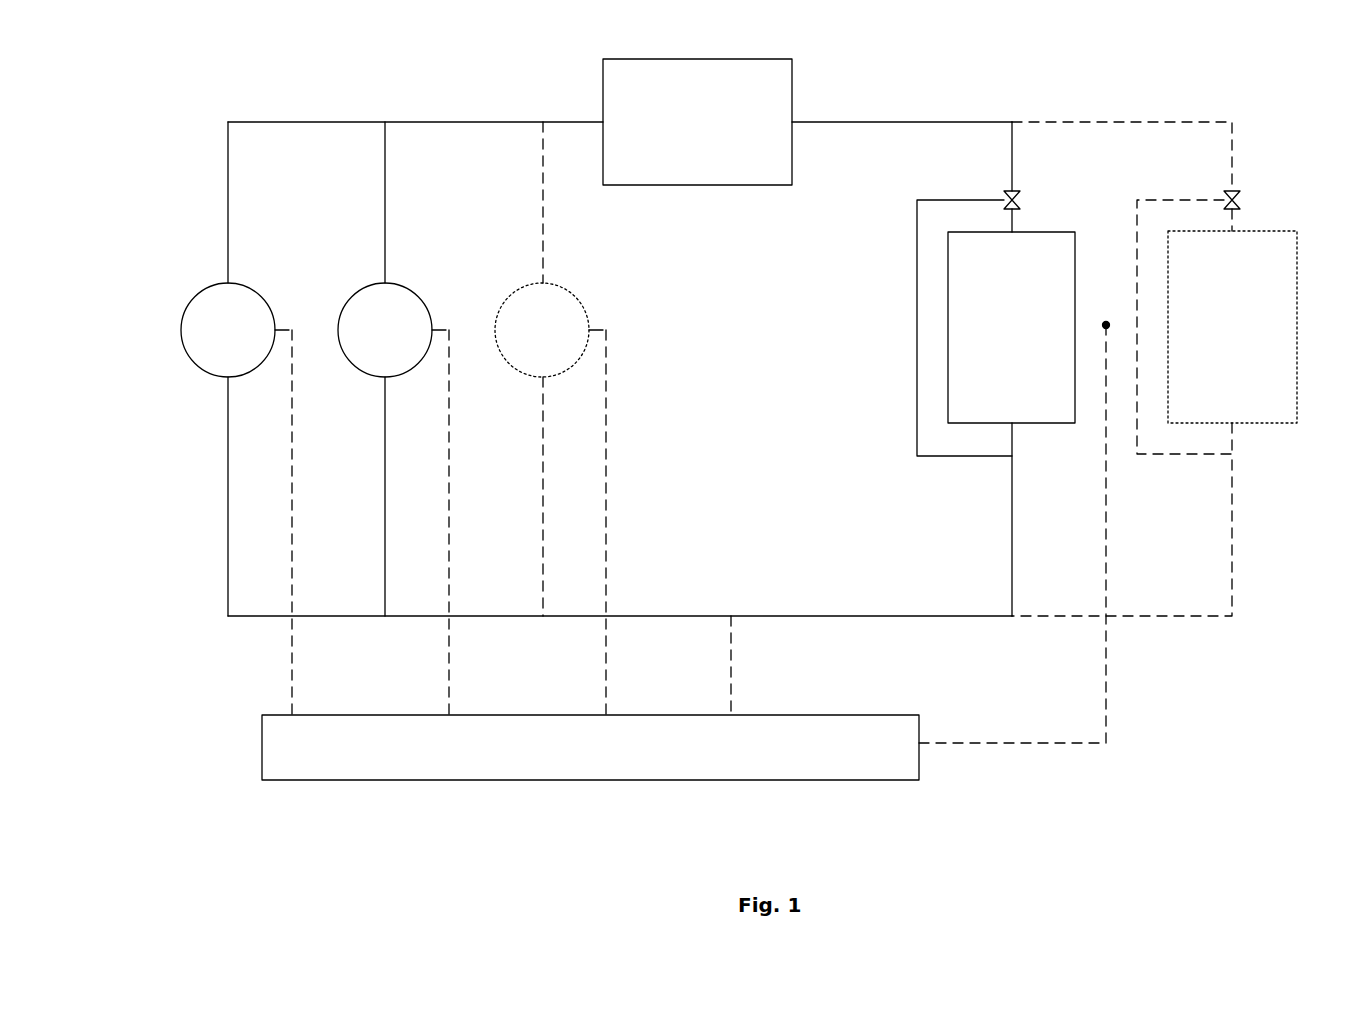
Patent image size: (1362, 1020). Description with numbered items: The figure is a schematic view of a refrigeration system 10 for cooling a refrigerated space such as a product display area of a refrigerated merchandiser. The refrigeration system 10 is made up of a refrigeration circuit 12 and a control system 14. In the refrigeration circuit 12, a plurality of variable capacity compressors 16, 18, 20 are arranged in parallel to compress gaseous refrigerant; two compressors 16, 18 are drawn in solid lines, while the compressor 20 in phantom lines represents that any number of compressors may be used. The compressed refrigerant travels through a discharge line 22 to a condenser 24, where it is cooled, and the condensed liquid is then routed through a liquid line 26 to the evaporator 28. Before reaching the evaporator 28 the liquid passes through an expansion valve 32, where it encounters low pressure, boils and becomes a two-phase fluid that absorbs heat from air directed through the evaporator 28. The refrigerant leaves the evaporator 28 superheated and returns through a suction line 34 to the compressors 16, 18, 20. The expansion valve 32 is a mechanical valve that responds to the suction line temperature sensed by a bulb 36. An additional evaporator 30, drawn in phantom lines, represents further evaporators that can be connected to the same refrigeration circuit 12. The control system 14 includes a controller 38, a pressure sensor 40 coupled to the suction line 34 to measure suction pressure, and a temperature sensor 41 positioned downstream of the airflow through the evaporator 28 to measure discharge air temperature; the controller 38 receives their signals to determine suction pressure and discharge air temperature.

The refrigeration system 10 is at (1000, 678).
The refrigeration circuit 12 is at (884, 122).
The control system 14 is at (590, 767).
The variable capacity compressor 16 is at (265, 302).
The variable capacity compressor 18 is at (421, 302).
The variable capacity compressor 20 is at (578, 300).
The discharge line 22 is at (415, 122).
The condenser 24 is at (698, 59).
The liquid line 26 is at (980, 122).
The evaporator 28 is at (1043, 230).
The evaporator 30 is at (1282, 230).
The expansion valve 32 is at (1012, 192).
The suction line 34 is at (896, 616).
The bulb 36 is at (1012, 456).
The controller 38 is at (763, 752).
The pressure sensor 40 is at (731, 616).
The temperature sensor 41 is at (1106, 312).